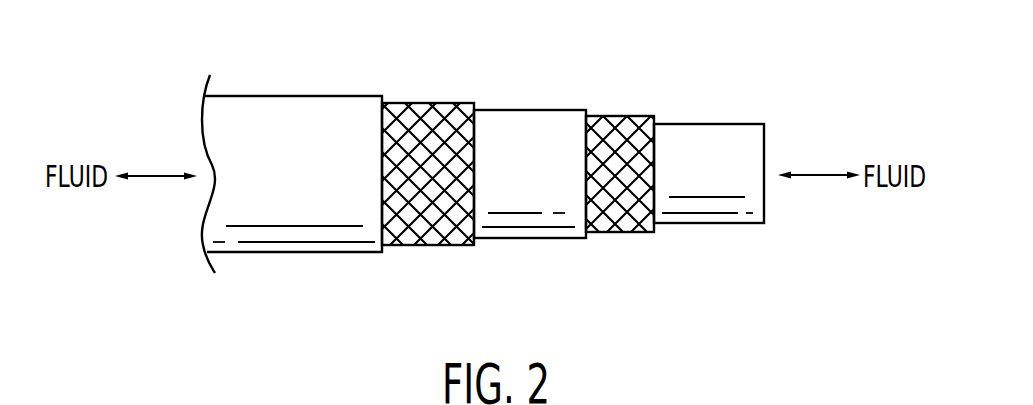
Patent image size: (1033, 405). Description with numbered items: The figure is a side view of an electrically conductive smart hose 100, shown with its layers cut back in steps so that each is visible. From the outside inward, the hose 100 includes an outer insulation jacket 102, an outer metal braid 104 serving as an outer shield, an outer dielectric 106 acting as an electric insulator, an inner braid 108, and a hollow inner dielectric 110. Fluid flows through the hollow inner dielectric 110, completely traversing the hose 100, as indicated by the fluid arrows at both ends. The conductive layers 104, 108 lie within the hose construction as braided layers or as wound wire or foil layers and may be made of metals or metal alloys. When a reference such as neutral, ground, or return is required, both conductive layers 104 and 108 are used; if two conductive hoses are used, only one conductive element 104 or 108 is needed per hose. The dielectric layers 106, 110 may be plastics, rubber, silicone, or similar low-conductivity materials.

The smart hose 100 is at (645, 58).
The outer insulation jacket 102 is at (284, 217).
The outer metal braid 104 is at (422, 218).
The outer dielectric 106 is at (520, 218).
The inner braid 108 is at (617, 210).
The hollow inner dielectric 110 is at (705, 203).